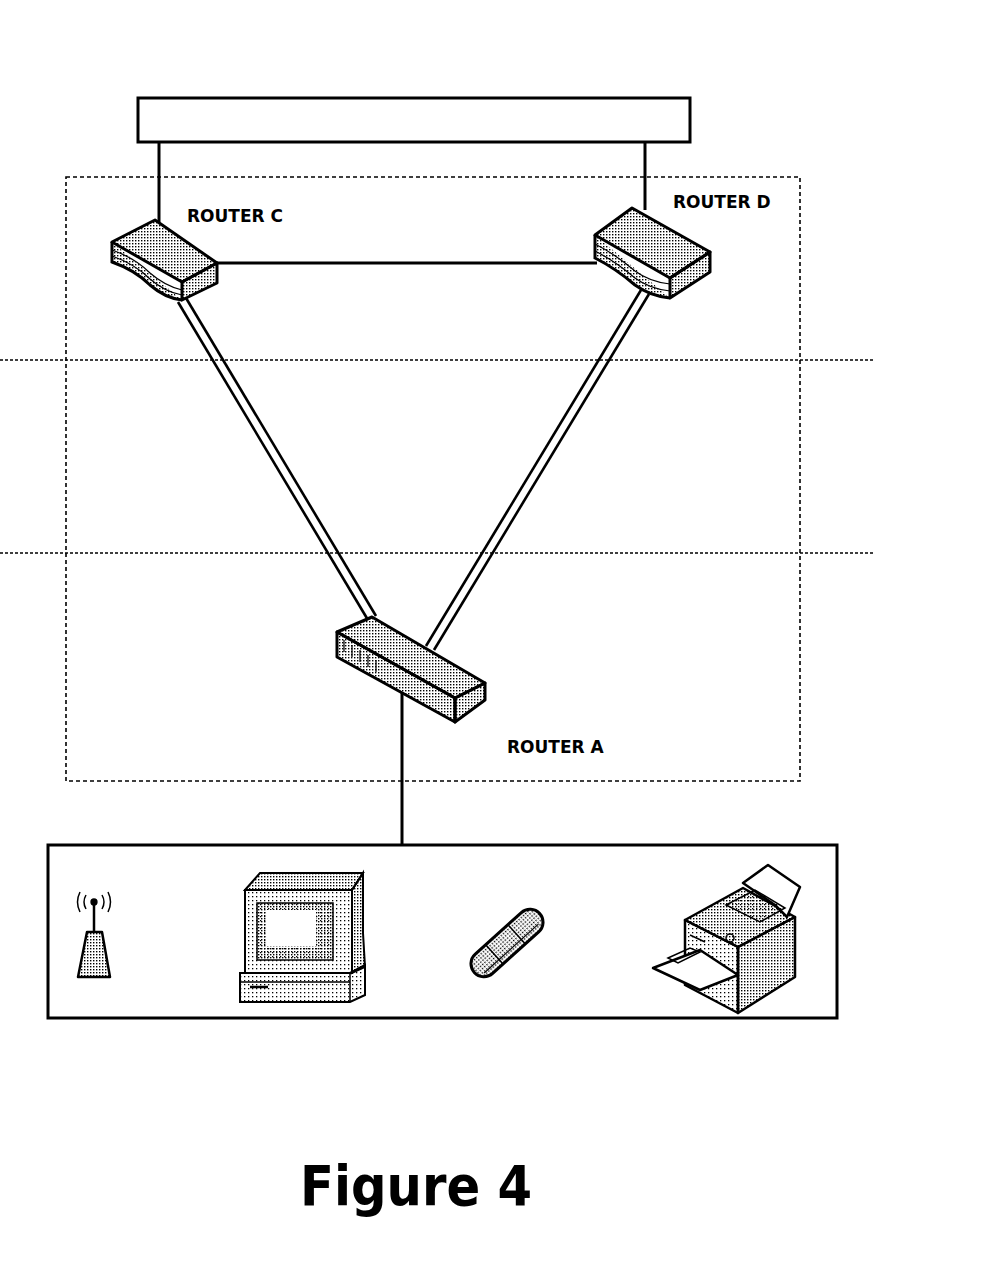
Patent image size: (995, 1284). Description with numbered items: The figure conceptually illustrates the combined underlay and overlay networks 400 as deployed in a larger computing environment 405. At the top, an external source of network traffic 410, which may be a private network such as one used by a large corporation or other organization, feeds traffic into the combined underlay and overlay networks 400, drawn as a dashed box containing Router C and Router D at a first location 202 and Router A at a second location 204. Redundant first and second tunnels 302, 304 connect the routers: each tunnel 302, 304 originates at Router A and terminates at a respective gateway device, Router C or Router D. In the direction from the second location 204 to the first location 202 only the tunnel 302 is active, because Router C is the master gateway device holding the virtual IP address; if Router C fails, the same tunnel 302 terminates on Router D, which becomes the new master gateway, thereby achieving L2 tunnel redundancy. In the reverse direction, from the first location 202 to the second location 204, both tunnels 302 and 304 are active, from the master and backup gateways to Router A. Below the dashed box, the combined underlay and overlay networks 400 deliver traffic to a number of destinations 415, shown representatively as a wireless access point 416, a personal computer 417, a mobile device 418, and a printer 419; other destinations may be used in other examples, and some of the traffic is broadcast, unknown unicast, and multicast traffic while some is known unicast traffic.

The larger computing environment 405 is at (146, 49).
The external source of network traffic 410 is at (414, 120).
The combined underlay and overlay networks 400 is at (800, 177).
The first location 202 is at (437, 342).
The second location 204 is at (437, 572).
The first tunnel 302 is at (275, 437).
The second tunnel 304 is at (515, 480).
The destinations 415 is at (837, 845).
The wireless access point 416 is at (93, 978).
The personal computer 417 is at (307, 1003).
The mobile device 418 is at (488, 983).
The printer 419 is at (707, 1005).